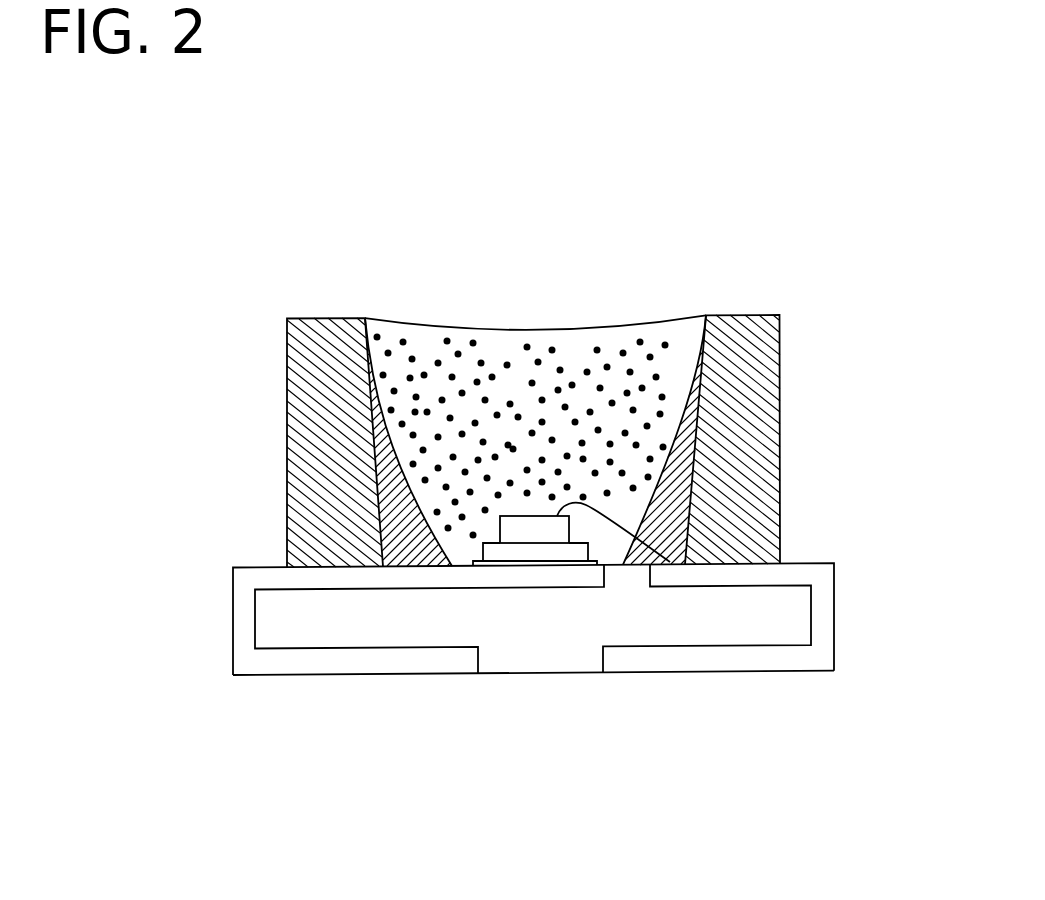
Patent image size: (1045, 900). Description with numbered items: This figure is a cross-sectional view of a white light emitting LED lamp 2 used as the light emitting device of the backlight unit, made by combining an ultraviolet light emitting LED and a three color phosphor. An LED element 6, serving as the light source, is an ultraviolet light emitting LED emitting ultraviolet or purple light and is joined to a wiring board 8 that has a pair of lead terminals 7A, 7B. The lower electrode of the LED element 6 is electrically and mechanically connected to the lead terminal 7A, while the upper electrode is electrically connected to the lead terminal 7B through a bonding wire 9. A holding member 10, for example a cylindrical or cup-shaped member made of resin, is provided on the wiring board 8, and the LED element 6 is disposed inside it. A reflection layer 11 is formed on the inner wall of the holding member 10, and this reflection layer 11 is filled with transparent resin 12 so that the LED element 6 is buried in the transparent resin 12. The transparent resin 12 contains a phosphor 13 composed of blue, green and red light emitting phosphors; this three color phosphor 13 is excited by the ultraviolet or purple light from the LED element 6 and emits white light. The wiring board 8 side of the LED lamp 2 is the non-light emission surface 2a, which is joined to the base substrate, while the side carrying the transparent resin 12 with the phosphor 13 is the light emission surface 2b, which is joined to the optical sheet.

The LED lamp 2 is at (748, 245).
The non-light emission surface 2a is at (535, 710).
The light emission surface 2b is at (538, 288).
The LED element 6 is at (533, 530).
The lead terminal 7A is at (242, 607).
The lead terminal 7B is at (822, 610).
The wiring board 8 is at (725, 627).
The bonding wire 9 is at (603, 507).
The holding member 10 is at (752, 448).
The reflection layer 11 is at (680, 495).
The transparent resin 12 is at (423, 330).
The phosphor 13 is at (595, 348).